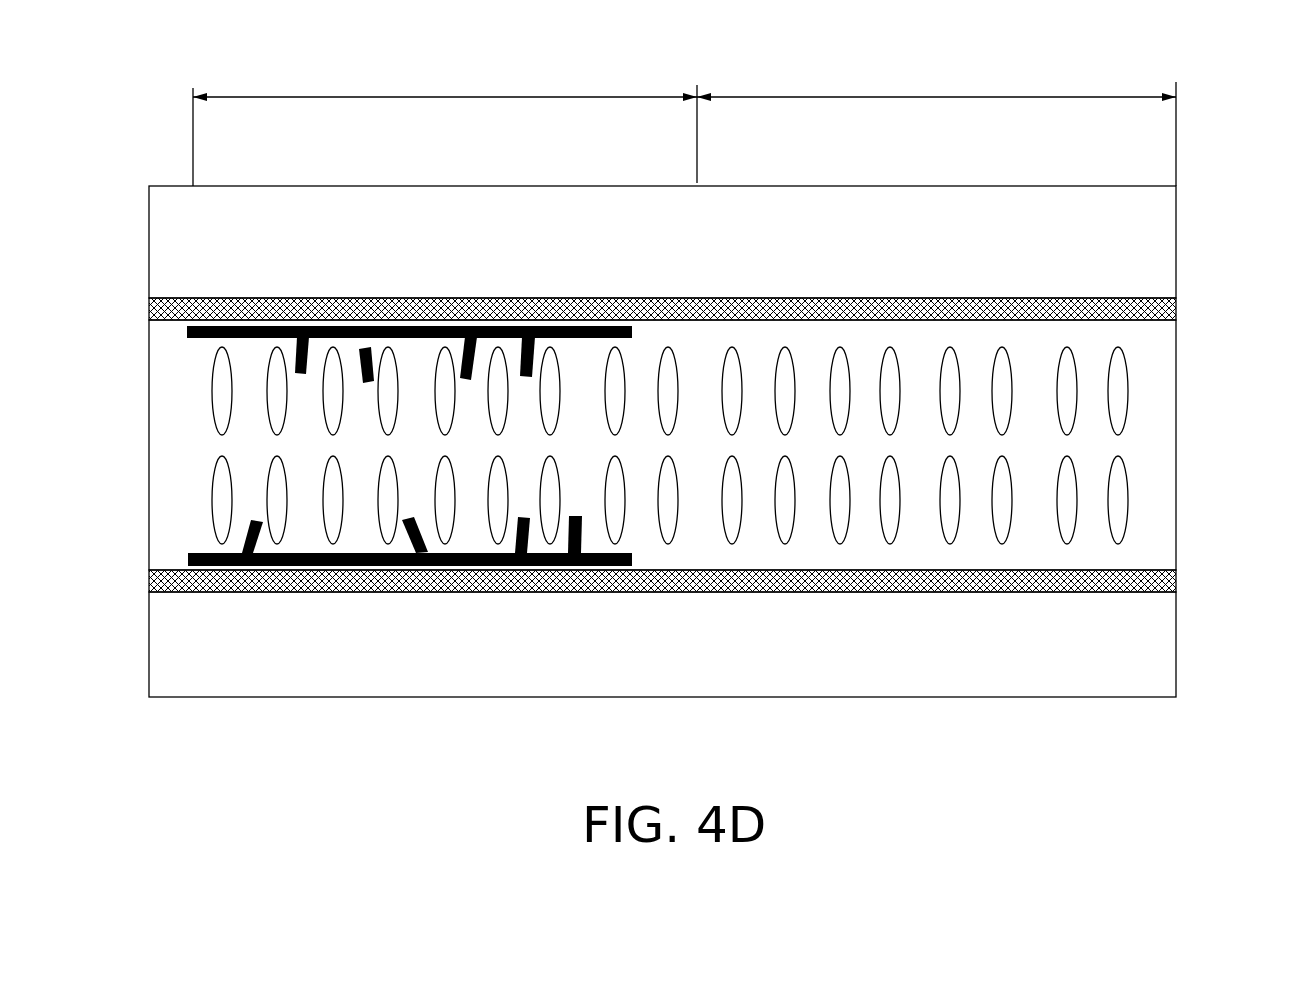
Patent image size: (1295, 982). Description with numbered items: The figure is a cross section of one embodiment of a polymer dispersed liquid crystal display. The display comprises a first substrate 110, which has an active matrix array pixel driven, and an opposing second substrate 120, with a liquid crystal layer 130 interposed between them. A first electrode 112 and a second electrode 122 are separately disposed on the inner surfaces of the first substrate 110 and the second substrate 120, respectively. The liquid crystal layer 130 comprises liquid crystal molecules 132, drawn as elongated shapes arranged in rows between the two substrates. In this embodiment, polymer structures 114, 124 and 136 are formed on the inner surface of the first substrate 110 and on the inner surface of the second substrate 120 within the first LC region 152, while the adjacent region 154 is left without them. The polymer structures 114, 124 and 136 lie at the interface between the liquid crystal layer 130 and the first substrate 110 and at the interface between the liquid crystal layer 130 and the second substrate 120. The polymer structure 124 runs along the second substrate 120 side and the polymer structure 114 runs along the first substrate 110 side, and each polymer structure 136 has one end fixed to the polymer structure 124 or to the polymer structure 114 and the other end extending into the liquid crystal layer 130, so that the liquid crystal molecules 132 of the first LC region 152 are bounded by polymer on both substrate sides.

The first substrate 110 is at (1155, 640).
The first electrode 112 is at (1176, 578).
The polymer structure 114 is at (188, 558).
The second substrate 120 is at (1155, 257).
The second electrode 122 is at (1175, 310).
The polymer structure 124 is at (187, 331).
The liquid crystal layer 130 is at (1155, 441).
The liquid crystal molecules 132 is at (1118, 515).
The polymer structure 136 is at (295, 344).
The first LC region 152 is at (445, 124).
The second region 154 is at (936, 124).